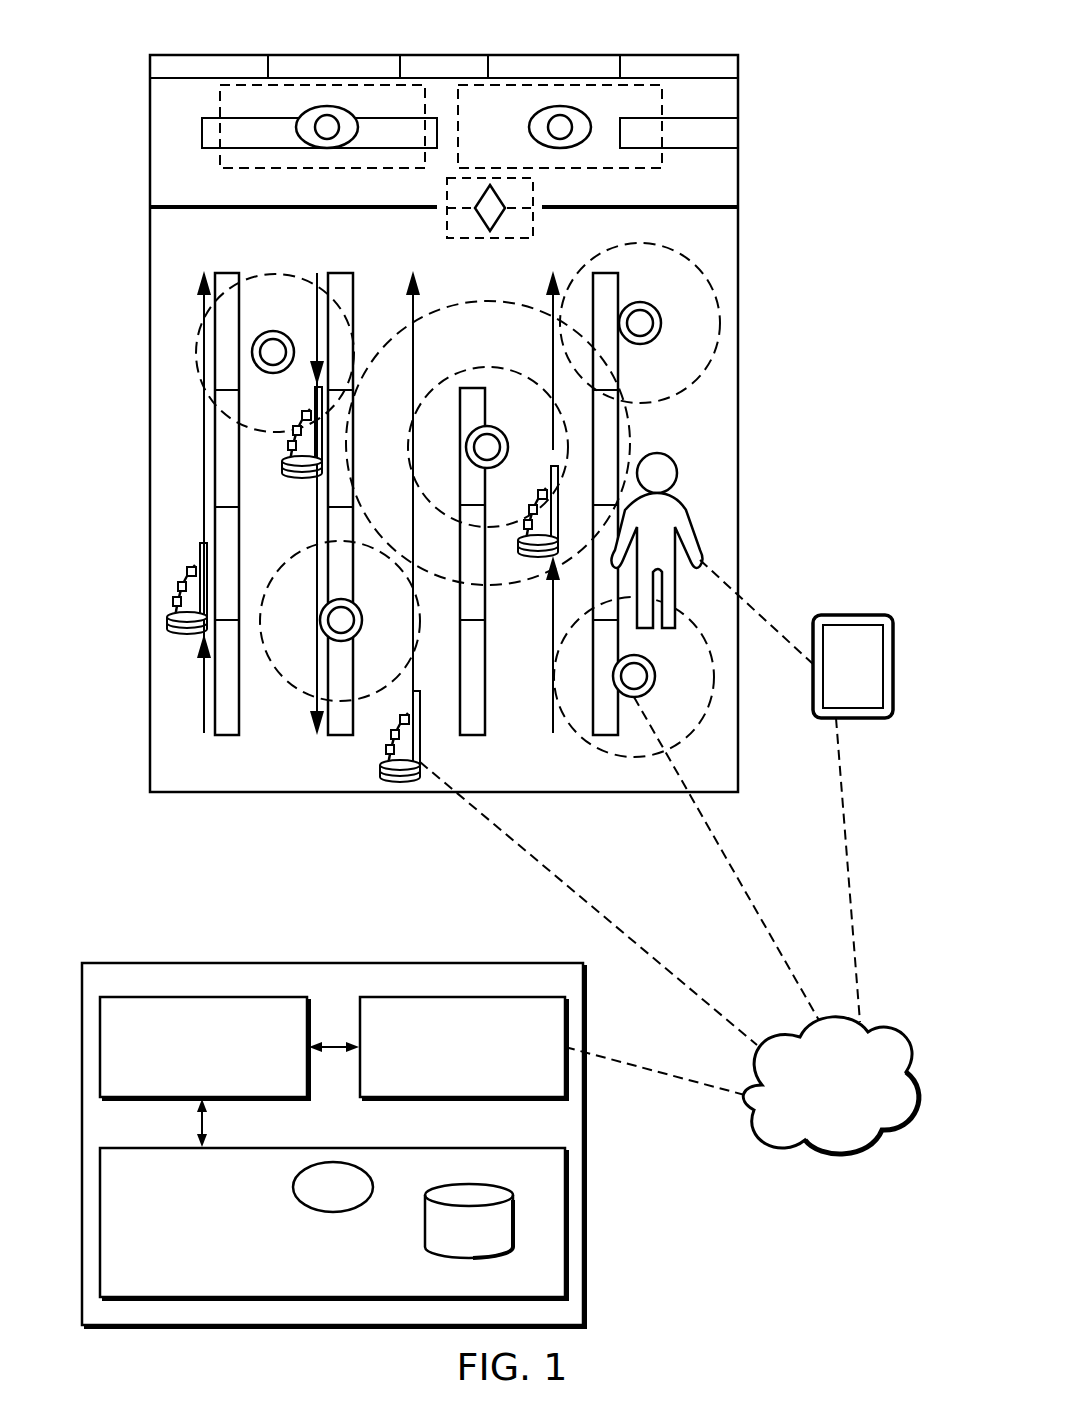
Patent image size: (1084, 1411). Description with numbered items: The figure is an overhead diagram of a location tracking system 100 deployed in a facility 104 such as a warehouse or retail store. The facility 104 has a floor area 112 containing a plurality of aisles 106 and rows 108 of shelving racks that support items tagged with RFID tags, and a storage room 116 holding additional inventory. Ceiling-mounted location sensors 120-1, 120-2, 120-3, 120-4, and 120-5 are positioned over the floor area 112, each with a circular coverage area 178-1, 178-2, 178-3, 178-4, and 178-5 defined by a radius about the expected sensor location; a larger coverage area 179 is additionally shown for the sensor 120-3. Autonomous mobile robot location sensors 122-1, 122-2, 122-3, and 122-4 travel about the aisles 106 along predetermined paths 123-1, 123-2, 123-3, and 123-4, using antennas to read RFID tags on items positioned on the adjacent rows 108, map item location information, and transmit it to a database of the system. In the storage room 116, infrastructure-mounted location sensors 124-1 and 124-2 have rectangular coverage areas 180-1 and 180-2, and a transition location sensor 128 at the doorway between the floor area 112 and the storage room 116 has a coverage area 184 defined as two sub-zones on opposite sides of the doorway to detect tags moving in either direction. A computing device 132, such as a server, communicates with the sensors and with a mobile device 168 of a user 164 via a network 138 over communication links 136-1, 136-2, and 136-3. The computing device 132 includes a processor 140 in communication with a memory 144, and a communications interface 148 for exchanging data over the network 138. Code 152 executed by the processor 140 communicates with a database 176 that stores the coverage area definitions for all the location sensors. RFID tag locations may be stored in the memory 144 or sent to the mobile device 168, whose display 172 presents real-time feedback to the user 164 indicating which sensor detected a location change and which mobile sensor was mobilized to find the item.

The location tracking system 100 is at (862, 203).
The facility 104 is at (742, 239).
The aisles 106 is at (168, 684).
The rows 108 is at (226, 735).
The floor area 112 is at (725, 372).
The storage room 116 is at (728, 178).
The location sensor 120-1 is at (252, 350).
The location sensor 120-2 is at (661, 323).
The location sensor 120-3 is at (488, 425).
The location sensor 120-4 is at (320, 614).
The location sensor 120-5 is at (620, 690).
The location sensor 122-1 is at (172, 607).
The location sensor 122-2 is at (290, 418).
The location sensor 122-3 is at (382, 762).
The location sensor 122-4 is at (548, 506).
The predetermined path 123-1 is at (200, 433).
The predetermined path 123-2 is at (312, 378).
The predetermined path 123-3 is at (405, 540).
The predetermined path 123-4 is at (560, 400).
The location sensor 124-1 is at (320, 106).
The location sensor 124-2 is at (554, 106).
The transition location sensor 128 is at (472, 197).
The computing device 132 is at (600, 1268).
The communication link 136-1 is at (550, 884).
The communication link 136-2 is at (730, 858).
The communication link 136-3 is at (849, 870).
The network 138 is at (742, 1085).
The processor 140 is at (229, 1072).
The memory 144 is at (333, 1223).
The communications interface 148 is at (463, 1048).
The code 152 is at (333, 1187).
The user 164 is at (677, 475).
The mobile device 168 is at (876, 600).
The display 172 is at (863, 700).
The database 176 is at (469, 1221).
The coverage area 178-1 is at (276, 273).
The coverage area 178-2 is at (720, 290).
The coverage area 178-3 is at (537, 385).
The coverage area 178-4 is at (262, 580).
The coverage area 178-5 is at (631, 757).
The larger coverage area 179 is at (518, 588).
The coverage area 180-1 is at (418, 92).
The coverage area 180-2 is at (645, 92).
The coverage area 184 is at (447, 226).